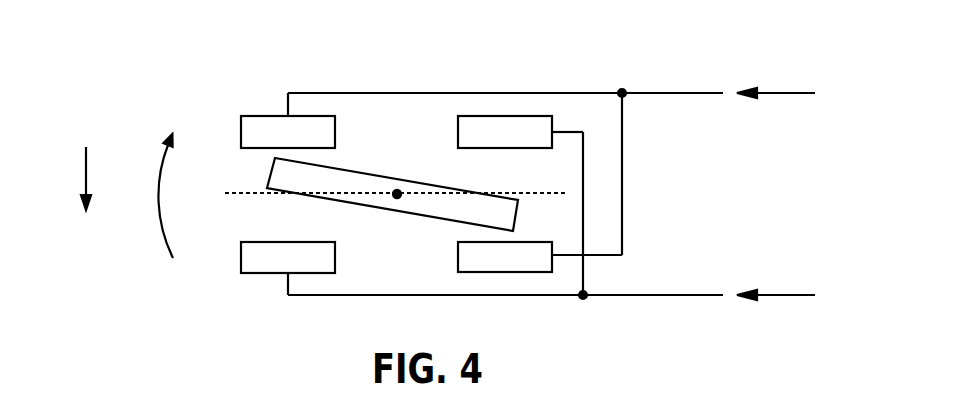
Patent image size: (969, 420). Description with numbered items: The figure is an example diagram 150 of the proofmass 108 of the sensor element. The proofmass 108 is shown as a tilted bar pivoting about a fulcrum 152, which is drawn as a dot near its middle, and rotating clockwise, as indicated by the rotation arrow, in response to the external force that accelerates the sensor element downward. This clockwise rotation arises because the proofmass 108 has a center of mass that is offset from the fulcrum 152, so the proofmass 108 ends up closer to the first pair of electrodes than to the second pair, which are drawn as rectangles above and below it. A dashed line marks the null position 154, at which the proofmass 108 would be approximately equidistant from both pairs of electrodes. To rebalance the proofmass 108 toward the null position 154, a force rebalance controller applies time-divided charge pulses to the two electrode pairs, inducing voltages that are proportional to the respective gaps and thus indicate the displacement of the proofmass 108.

The diagram 150 is at (110, 48).
The proofmass 108 is at (338, 168).
The null position 154 is at (258, 193).
The fulcrum 152 is at (397, 194).